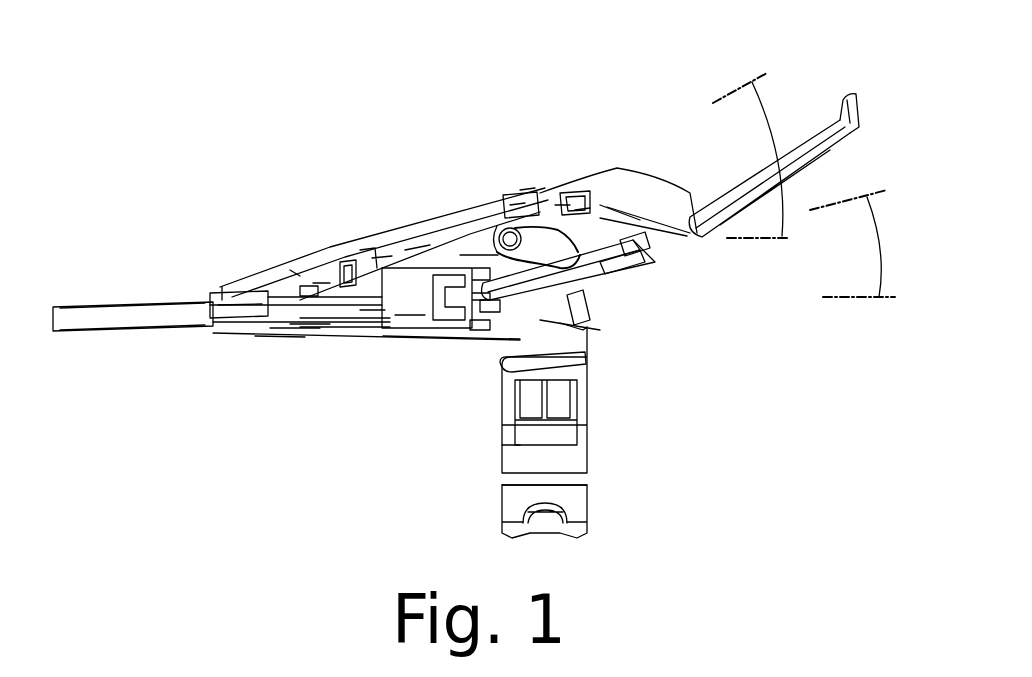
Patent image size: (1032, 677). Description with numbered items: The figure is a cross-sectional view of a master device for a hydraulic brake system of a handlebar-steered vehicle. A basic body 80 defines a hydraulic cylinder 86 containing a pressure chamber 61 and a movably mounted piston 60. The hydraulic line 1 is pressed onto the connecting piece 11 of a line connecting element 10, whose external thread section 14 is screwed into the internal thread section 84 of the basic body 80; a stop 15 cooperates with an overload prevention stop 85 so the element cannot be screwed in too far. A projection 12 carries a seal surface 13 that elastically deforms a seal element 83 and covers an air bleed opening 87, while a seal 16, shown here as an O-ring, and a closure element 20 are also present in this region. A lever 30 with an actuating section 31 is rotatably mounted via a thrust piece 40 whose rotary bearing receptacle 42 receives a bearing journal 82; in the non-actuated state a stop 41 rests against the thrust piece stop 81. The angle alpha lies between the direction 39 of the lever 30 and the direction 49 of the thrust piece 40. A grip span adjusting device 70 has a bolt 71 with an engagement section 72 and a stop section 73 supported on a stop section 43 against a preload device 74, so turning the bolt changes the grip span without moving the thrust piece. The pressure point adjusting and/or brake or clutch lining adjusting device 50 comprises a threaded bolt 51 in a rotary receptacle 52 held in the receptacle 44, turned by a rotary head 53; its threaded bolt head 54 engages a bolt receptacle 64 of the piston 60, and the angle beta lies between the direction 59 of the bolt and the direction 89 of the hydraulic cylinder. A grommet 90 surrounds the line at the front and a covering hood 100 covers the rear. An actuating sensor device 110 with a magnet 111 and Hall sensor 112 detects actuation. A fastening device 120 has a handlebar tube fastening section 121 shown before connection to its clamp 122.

The hydraulic line 1 is at (162, 313).
The line connecting element 10 is at (282, 297).
The connecting piece 11 is at (222, 303).
The projection 12 is at (375, 313).
The seal surface 13 is at (358, 320).
The thread section 14 is at (300, 323).
The stop 15 is at (313, 322).
The seal 16 is at (293, 333).
The closure element 20 is at (334, 290).
The lever 30 is at (842, 122).
The actuating section 31 is at (783, 153).
The direction of the lever 39 is at (717, 100).
The thrust piece 40 is at (500, 247).
The stop 41 is at (478, 247).
The rotary bearing receptacle 42 is at (500, 234).
The stop section 43 is at (583, 240).
The receptacle 44 is at (573, 253).
The direction of the thrust piece 49 is at (750, 237).
The pressure point adjusting and/or brake or clutch lining adjusting device 50 is at (635, 309).
The threaded bolt 51 is at (577, 313).
The rotary receptacle 52 is at (585, 291).
The rotary head 53 is at (625, 274).
The threaded bolt head 54 is at (495, 325).
The direction of the bolt 59 is at (845, 202).
The piston 60 is at (442, 320).
The pressure chamber 61 is at (410, 315).
The bolt receptacle 64 is at (478, 325).
The grip span adjusting device 70 is at (572, 150).
The bolt 71 is at (573, 212).
The engagement section 72 is at (574, 212).
The stop section 73 is at (522, 210).
The preload device 74 is at (520, 207).
The basic body 80 is at (412, 315).
The thrust piece stop 81 is at (435, 250).
The bearing journal 82 is at (633, 243).
The seal element 83 is at (382, 260).
The thread section 84 is at (307, 290).
The overload prevention stop 85 is at (320, 290).
The hydraulic cylinder 86 is at (414, 250).
The air bleed opening 87 is at (365, 250).
The direction of the hydraulic cylinder 89 is at (820, 297).
The grommet 90 is at (293, 273).
The covering hood 100 is at (523, 207).
The actuating sensor device 110 is at (628, 404).
The magnet 111 is at (580, 317).
The Hall sensor 112 is at (543, 343).
The fastening device 120 is at (405, 507).
The handlebar tube fastening section 121 is at (510, 450).
The clamp 122 is at (577, 500).